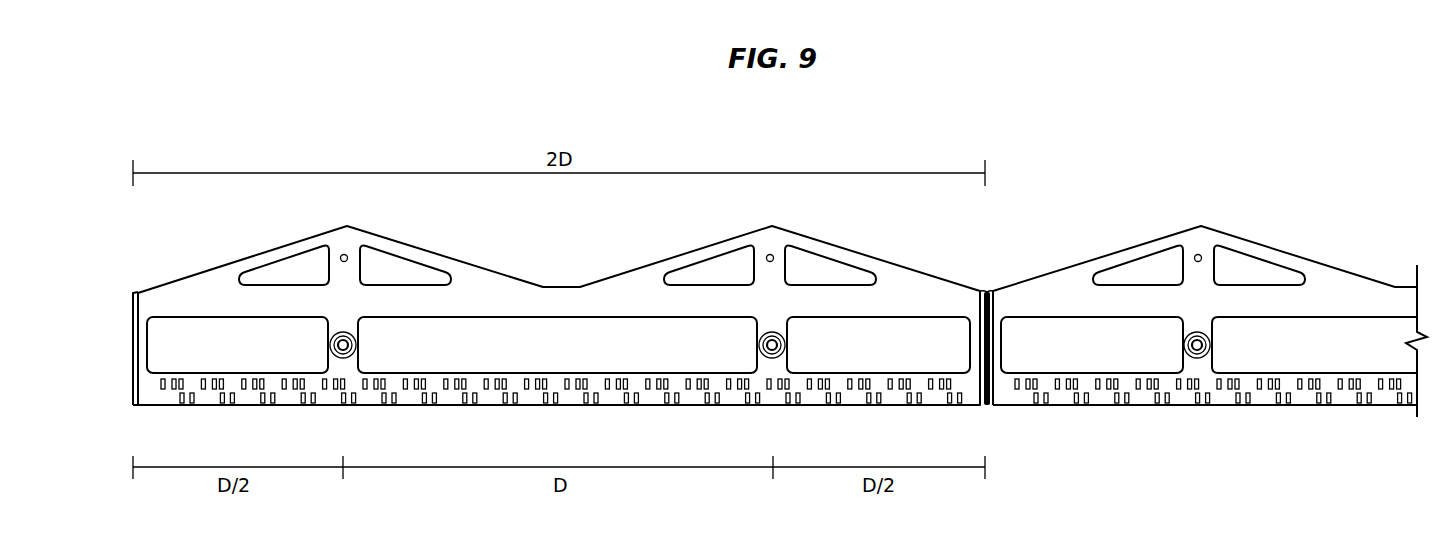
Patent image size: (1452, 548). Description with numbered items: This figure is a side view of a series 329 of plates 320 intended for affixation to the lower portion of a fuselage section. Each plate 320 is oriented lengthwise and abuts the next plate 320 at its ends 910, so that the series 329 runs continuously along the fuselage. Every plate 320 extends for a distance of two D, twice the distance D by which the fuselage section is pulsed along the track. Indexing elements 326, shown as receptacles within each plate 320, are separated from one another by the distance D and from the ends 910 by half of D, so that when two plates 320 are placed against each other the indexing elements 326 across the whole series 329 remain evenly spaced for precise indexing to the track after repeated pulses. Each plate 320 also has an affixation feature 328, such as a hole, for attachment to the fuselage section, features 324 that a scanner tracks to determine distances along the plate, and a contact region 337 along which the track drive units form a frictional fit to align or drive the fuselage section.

The plate 320 is at (173, 406).
The features 324 is at (285, 404).
The indexing element 326 is at (356, 339).
The affixation feature 328 is at (344, 254).
The series of plates 329 is at (150, 279).
The contact region 337 is at (121, 287).
The end of plate 910 is at (132, 349).